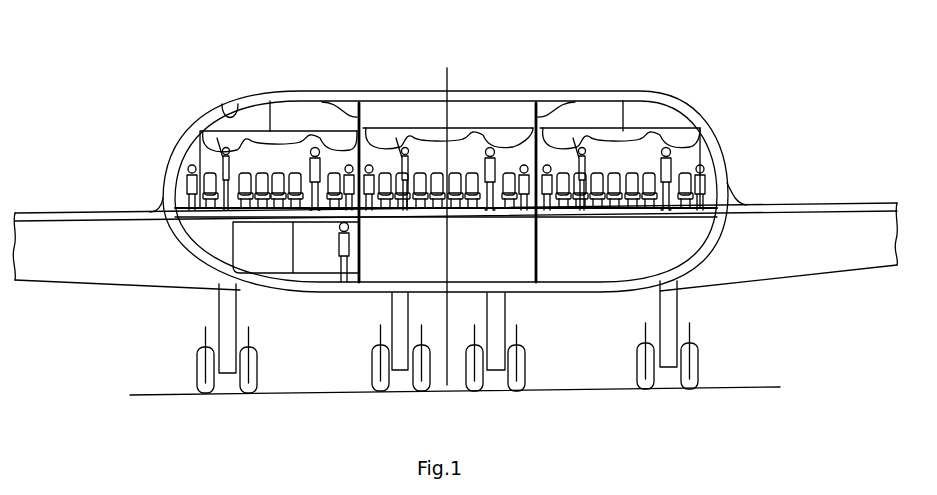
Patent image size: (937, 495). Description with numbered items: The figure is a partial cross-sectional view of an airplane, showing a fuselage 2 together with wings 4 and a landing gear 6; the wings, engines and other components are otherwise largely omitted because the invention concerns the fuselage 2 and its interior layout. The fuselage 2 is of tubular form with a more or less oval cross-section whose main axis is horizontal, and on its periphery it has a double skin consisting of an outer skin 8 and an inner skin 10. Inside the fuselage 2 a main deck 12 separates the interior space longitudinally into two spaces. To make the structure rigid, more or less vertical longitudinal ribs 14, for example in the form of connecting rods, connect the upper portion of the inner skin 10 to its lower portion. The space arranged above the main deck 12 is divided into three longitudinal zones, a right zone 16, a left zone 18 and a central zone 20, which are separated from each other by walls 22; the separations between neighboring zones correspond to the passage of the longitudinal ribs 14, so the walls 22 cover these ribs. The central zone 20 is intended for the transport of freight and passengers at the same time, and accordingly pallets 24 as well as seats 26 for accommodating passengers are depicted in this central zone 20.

The fuselage 2 is at (700, 97).
The wings 4 is at (65, 230).
The landing gear 6 is at (696, 305).
The outer skin 8 is at (233, 103).
The inner skin 10 is at (228, 117).
The main deck 12 is at (203, 213).
The longitudinal ribs 14 is at (360, 110).
The right zone 16 is at (265, 118).
The left zone 18 is at (627, 115).
The central zone 20 is at (452, 128).
The walls 22 is at (352, 118).
The pallets 24 is at (203, 148).
The seats 26 is at (631, 190).